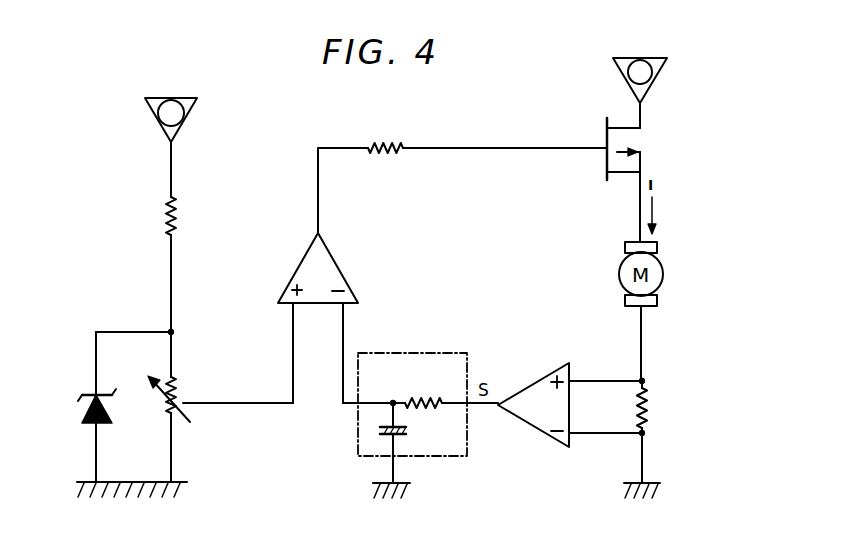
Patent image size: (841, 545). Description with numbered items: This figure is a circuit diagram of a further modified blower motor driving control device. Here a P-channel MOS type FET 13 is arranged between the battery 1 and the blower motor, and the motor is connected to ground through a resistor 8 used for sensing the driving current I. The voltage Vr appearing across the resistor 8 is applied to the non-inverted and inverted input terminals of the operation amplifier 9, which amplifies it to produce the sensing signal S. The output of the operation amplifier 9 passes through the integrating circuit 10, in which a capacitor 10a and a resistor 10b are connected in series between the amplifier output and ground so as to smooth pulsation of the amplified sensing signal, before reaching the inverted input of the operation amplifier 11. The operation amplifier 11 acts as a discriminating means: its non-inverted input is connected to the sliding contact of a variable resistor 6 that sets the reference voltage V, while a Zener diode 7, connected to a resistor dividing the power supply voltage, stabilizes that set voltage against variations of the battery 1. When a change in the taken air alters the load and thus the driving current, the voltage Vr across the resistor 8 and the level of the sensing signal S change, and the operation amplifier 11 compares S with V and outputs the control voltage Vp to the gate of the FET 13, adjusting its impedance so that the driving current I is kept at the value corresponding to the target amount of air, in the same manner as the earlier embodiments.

The battery 1 is at (183, 128).
The variable resistor 6 is at (177, 388).
The Zener diode 7 is at (88, 425).
The driving current sensing resistor 8 is at (648, 406).
The operation amplifier for amplifying a sensing signal 9 is at (520, 392).
The integrating circuit 10 is at (470, 428).
The capacitor 10a is at (383, 432).
The resistor 10b is at (416, 398).
The operation amplifier for a comparison operation 11 is at (344, 274).
The P-channel MOS type FET 13 is at (622, 143).